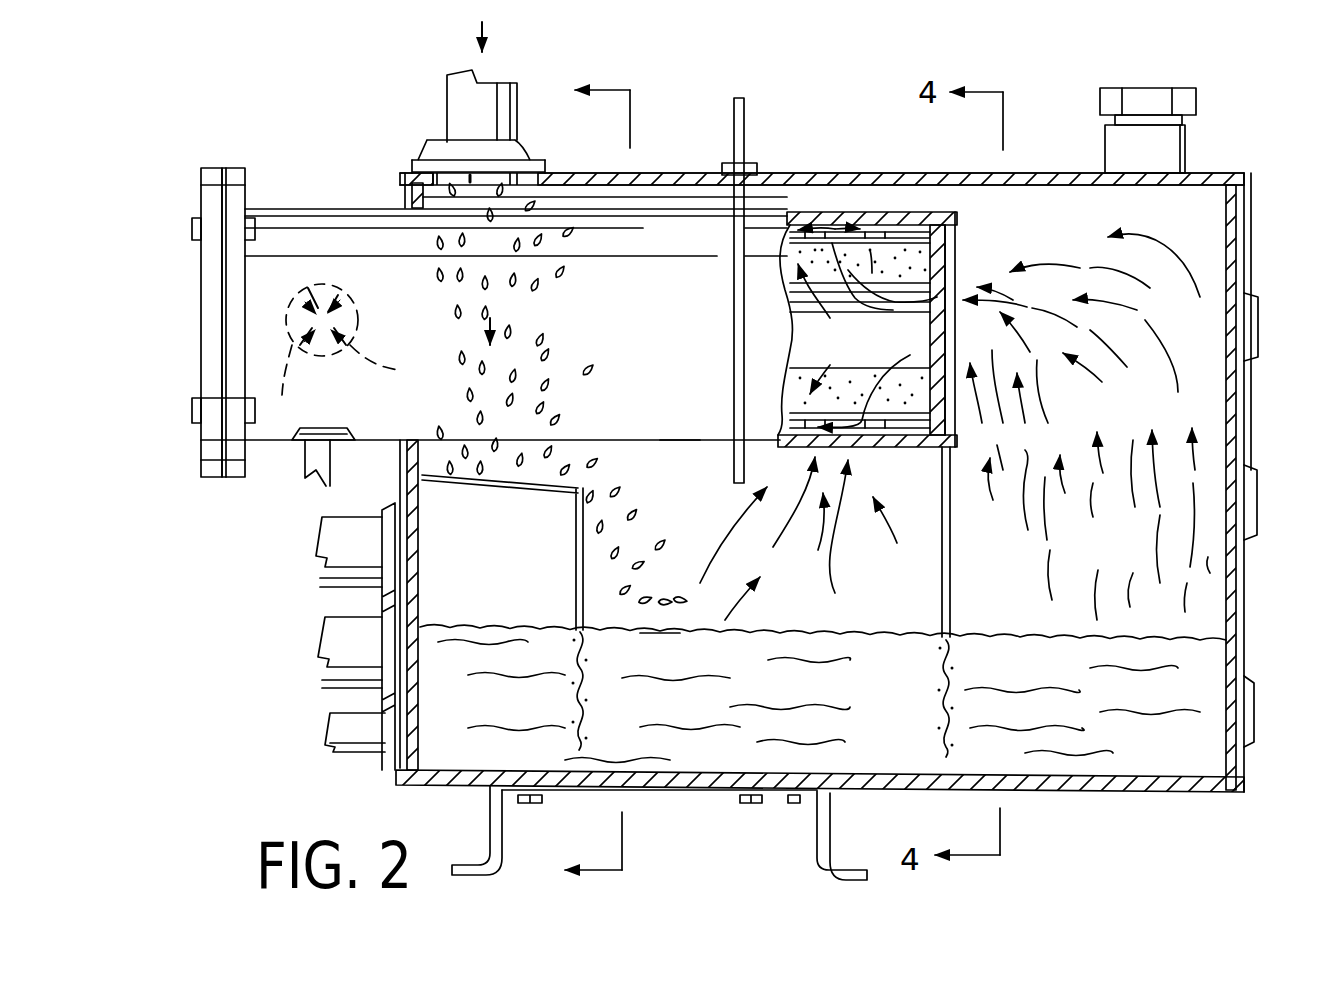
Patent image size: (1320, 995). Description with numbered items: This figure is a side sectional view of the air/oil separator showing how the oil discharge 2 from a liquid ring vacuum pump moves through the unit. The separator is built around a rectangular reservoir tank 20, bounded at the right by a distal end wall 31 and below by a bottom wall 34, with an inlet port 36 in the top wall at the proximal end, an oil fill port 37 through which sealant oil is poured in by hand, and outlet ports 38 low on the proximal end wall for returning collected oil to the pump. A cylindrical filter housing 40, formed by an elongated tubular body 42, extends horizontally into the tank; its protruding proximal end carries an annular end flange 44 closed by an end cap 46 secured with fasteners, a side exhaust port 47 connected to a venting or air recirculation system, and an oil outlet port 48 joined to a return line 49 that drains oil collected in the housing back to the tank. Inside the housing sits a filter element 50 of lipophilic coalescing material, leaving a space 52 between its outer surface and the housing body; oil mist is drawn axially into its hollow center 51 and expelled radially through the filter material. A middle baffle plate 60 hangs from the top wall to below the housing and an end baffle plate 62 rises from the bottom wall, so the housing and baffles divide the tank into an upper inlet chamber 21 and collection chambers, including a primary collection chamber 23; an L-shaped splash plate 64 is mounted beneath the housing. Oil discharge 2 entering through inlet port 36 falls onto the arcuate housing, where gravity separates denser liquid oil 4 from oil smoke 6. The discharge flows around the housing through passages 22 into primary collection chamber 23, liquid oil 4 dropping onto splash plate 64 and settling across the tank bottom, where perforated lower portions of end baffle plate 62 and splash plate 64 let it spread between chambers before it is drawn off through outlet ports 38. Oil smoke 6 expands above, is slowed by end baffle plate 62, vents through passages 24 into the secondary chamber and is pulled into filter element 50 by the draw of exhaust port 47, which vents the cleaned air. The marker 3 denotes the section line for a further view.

The oil discharge 2 is at (542, 297).
The section line 3- 3 is at (581, 483).
The liquid oil 4 is at (891, 242).
The oil smoke 6 is at (1123, 403).
The reservoir tank 20 is at (1022, 175).
The upper inlet chamber 21 is at (600, 175).
The passages 22 is at (710, 340).
The primary collection chamber 23 is at (677, 513).
The passages 24 is at (823, 330).
The distal end wall 31 is at (1233, 240).
The bottom wall 34 is at (1128, 786).
The inlet port 36 is at (455, 158).
The oil fill port 37 is at (1170, 157).
The outlet ports 38 is at (357, 722).
The filter housing 40 is at (372, 205).
The tubular body 42 is at (670, 238).
The annular end flange 44 is at (242, 200).
The end cap 46 is at (207, 350).
The side exhaust port 47 is at (332, 355).
The oil outlet port 48 is at (305, 442).
The return line 49 is at (322, 470).
The filter element 50 is at (853, 271).
The hollow center 51 is at (957, 338).
The space 52 is at (925, 210).
The middle baffle plate 60 is at (732, 390).
The end baffle plate 62 is at (943, 537).
The splash plate 64 is at (512, 492).